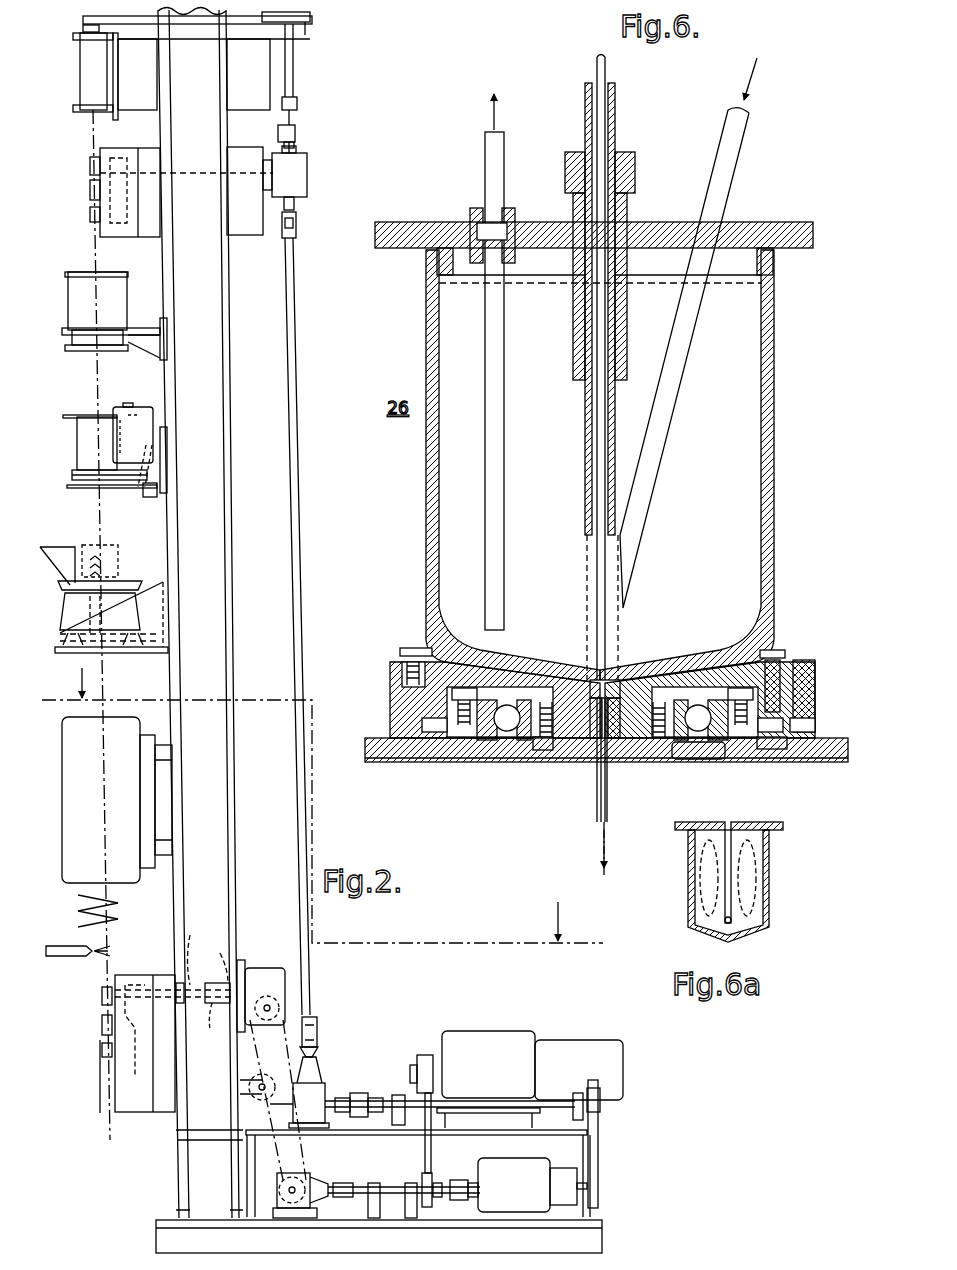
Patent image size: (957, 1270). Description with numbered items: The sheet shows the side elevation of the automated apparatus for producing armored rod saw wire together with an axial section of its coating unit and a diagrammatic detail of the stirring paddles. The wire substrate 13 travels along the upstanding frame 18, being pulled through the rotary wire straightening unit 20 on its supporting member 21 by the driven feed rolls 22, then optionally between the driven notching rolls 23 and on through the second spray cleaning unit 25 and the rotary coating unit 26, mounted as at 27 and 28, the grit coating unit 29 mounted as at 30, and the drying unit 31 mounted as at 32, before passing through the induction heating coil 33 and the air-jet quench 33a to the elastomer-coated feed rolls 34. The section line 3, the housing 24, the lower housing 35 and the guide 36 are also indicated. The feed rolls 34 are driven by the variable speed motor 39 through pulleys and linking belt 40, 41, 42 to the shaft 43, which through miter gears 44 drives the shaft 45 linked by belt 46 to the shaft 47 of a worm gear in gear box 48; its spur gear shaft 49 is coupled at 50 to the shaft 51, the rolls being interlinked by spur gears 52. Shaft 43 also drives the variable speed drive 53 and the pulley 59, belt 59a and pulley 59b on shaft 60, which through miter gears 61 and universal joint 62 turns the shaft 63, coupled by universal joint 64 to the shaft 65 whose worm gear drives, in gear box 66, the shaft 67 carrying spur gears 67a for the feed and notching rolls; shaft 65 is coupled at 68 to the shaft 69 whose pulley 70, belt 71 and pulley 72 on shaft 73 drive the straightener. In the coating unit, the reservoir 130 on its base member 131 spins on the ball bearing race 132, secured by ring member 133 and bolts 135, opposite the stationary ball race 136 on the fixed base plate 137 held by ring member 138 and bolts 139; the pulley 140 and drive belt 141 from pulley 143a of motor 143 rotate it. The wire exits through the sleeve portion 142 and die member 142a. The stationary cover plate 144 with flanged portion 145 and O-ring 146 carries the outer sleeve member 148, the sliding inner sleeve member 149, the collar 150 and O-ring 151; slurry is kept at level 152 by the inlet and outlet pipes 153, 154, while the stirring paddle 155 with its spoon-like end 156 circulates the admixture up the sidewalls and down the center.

In FIG. 2, the section line 3- 3 is at (322, 805).
In FIG. 6, the wire substrate 13 is at (608, 798).
In FIG. 2, the upstanding frame 18 is at (208, 497).
In FIG. 2, the rotary wire straightening unit 20 is at (80, 78).
In FIG. 2, the supporting member 21 is at (137, 82).
In FIG. 2, the driven feed rolls 22 is at (88, 180).
In FIG. 2, the driven notching rolls 23 is at (90, 215).
In FIG. 2, the carriage housing 24 is at (133, 237).
In FIG. 2, the second spray cleaning unit 25 is at (68, 310).
In FIG. 2, the rotary coating unit 26 is at (77, 432).
In FIG. 2, the mounting 27 is at (146, 328).
In FIG. 2, the mounting 28 is at (152, 497).
In FIG. 2, the grit coating unit 29 is at (66, 610).
In FIG. 2, the mounting 30 is at (158, 653).
In FIG. 2, the drying unit 31 is at (76, 759).
In FIG. 2, the mounting 32 is at (166, 868).
In FIG. 2, the induction heating coil 33 is at (120, 912).
In FIG. 2, the air-jet quench 33a is at (72, 942).
In FIG. 2, the feed rolls 34 is at (100, 1012).
In FIG. 2, the lower housing 35 is at (144, 975).
In FIG. 2, the guide rod 36 is at (100, 1069).
In FIG. 2, the variable speed motor 39 is at (478, 1031).
In FIG. 2, the pulley 40 is at (423, 1055).
In FIG. 2, the linking belt 41 is at (432, 1175).
In FIG. 2, the pulley 42 is at (425, 1144).
In FIG. 2, the shaft 43 is at (362, 1184).
In FIG. 2, the miter gears 44 is at (306, 1173).
In FIG. 2, the shaft 45 is at (289, 1175).
In FIG. 2, the belt 46 is at (250, 1052).
In FIG. 2, the shaft 47 is at (270, 1006).
In FIG. 2, the gear box 48 is at (268, 968).
In FIG. 2, the shaft 49 is at (216, 959).
In FIG. 2, the coupling 50 is at (174, 1011).
In FIG. 2, the shaft 51 is at (198, 951).
In FIG. 2, the spur gears 52 is at (135, 1078).
In FIG. 2, the variable speed drive 53 is at (522, 1162).
In FIG. 2, the pulley 59 is at (588, 1225).
In FIG. 2, the belt 59a is at (600, 1116).
In FIG. 2, the pulley 59b is at (602, 1093).
In FIG. 2, the shaft 60 is at (478, 1104).
In FIG. 2, the miter gears 61 is at (326, 1076).
In FIG. 2, the universal joint 62 is at (318, 1028).
In FIG. 2, the shaft 63 is at (304, 628).
In FIG. 2, the universal joint 64 is at (297, 235).
In FIG. 2, the shaft 65 is at (296, 200).
In FIG. 2, the gear box 66 is at (308, 168).
In FIG. 2, the shaft 67 is at (191, 176).
In FIG. 2, the meshing spur gears 67a is at (123, 160).
In FIG. 2, the coupling 68 is at (296, 128).
In FIG. 2, the shaft 69 is at (294, 82).
In FIG. 2, the pulley 70 is at (307, 24).
In FIG. 2, the belt 71 is at (247, 24).
In FIG. 2, the pulley 72 is at (83, 18).
In FIG. 2, the shaft 73 is at (84, 30).
In FIG. 6, the reservoir 130 is at (774, 455).
In FIG. 6A, the reservoir 130 is at (780, 885).
In FIG. 6, the base member 131 is at (790, 660).
In FIG. 6, the ball bearing race 132 is at (518, 742).
In FIG. 6, the ring member 133 is at (690, 740).
In FIG. 6, the bolts 135 is at (544, 752).
In FIG. 6, the stationary ball race 136 is at (492, 742).
In FIG. 6, the fixed base plate 137 is at (395, 762).
In FIG. 6, the ring member 138 is at (722, 762).
In FIG. 6, the bolts 139 is at (767, 750).
In FIG. 2, the pulley 140 is at (73, 470).
In FIG. 6, the pulley 140 is at (815, 718).
In FIG. 2, the drive belt 141 is at (96, 489).
In FIG. 6, the drive belt 141 is at (815, 680).
In FIG. 6, the sleeve portion 142 is at (630, 675).
In FIG. 6, the die member 142a is at (592, 760).
In FIG. 2, the motor 143 is at (130, 405).
In FIG. 2, the pulley 143a is at (150, 470).
In FIG. 6, the stationary cover plate 144 is at (790, 225).
In FIG. 6A, the stationary cover plate 144 is at (772, 822).
In FIG. 6, the lower flanged portion 145 is at (468, 275).
In FIG. 6, the rubber sealing O-ring 146 is at (426, 254).
In FIG. 6, the outer sleeve member 148 is at (572, 336).
In FIG. 6, the inner sleeve member 149 is at (595, 440).
In FIG. 6, the collar 150 is at (562, 175).
In FIG. 6, the rubber O-ring 151 is at (632, 165).
In FIG. 6, the slurry level 152 is at (650, 286).
In FIG. 6, the inlet pipe 153 is at (682, 384).
In FIG. 6, the outlet pipe 154 is at (504, 525).
In FIG. 6A, the stirring paddle 155 is at (725, 862).
In FIG. 6A, the spoon-like end 156 is at (722, 922).